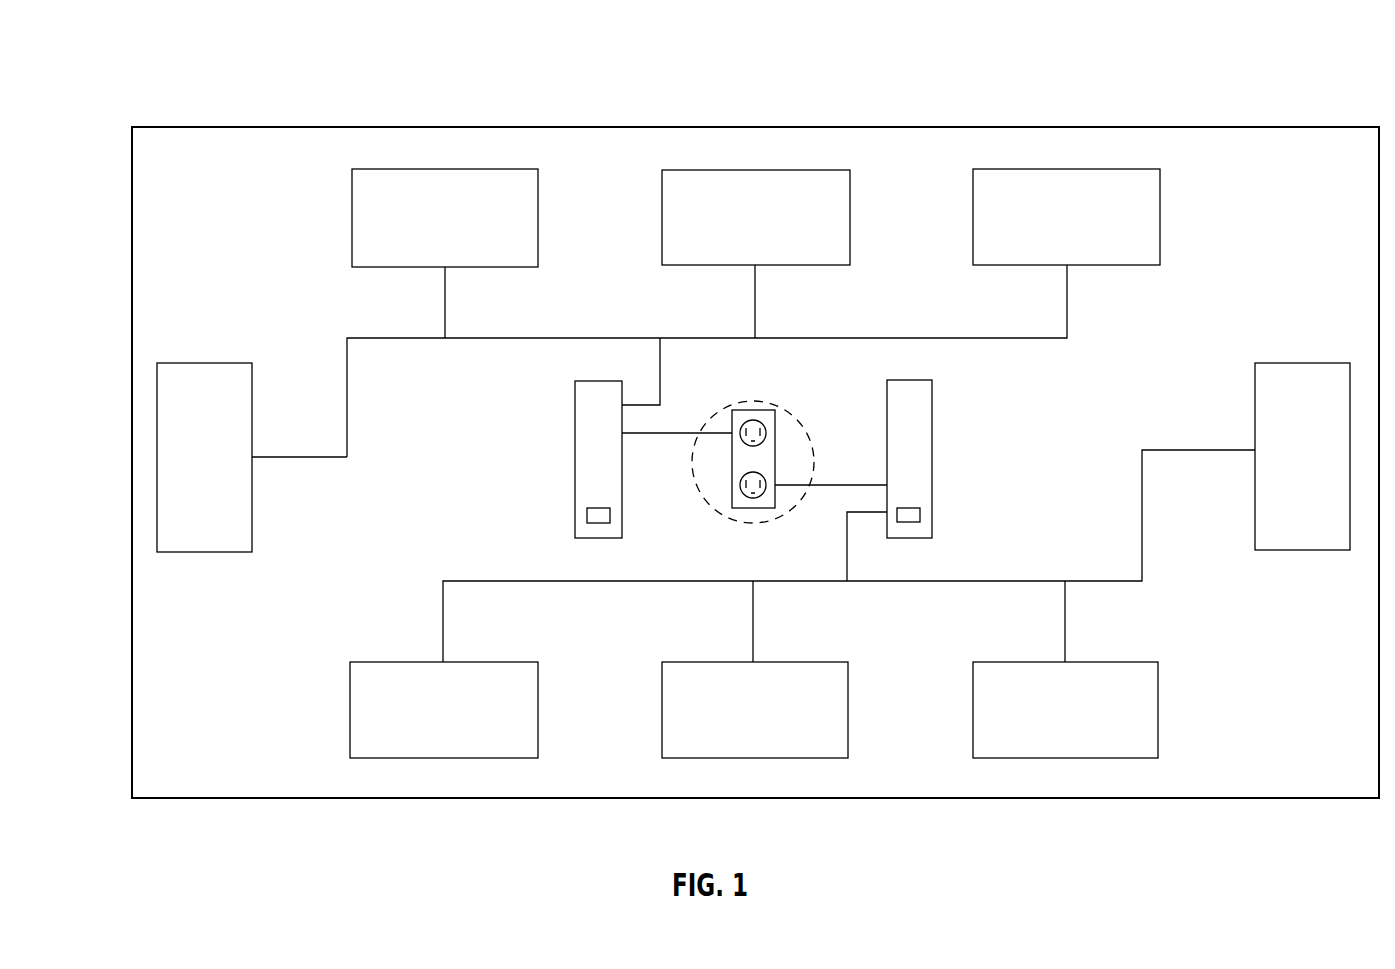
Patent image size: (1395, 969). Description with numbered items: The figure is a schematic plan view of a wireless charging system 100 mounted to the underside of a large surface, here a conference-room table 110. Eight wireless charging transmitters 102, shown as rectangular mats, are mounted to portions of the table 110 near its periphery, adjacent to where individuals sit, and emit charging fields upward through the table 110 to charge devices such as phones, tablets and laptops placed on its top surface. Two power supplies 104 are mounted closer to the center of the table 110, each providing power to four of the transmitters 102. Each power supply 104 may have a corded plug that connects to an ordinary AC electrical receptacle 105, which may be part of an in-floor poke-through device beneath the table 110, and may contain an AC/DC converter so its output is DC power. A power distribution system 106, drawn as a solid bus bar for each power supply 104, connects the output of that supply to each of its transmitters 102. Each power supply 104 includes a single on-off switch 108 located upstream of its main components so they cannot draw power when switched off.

The wireless charging system 100 is at (1289, 56).
The wireless charging transmitter 102 is at (420, 168).
The power supply 104 is at (598, 380).
The electrical receptacle 105 is at (753, 410).
The power distribution system 106 is at (910, 337).
The on-off switch 108 is at (612, 516).
The conference-room table 110 is at (1300, 127).